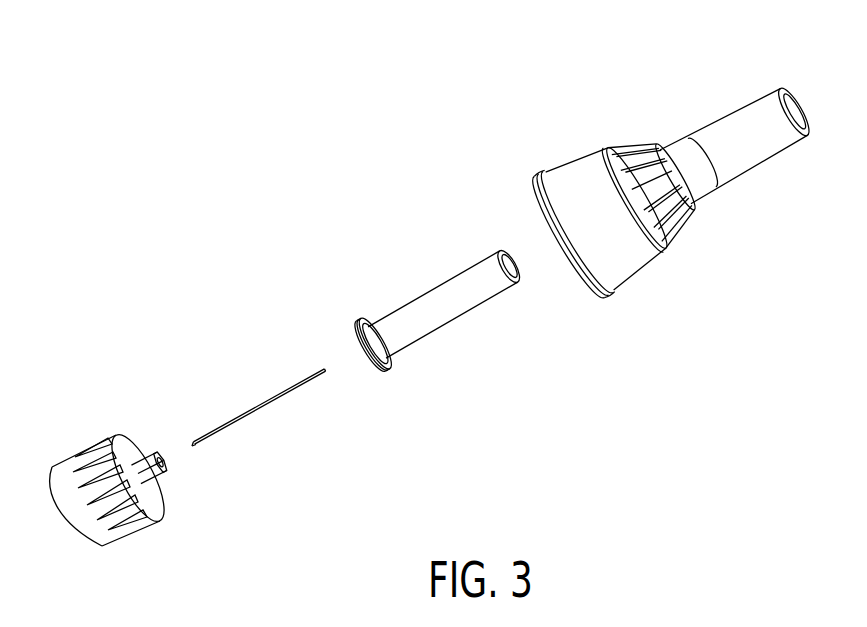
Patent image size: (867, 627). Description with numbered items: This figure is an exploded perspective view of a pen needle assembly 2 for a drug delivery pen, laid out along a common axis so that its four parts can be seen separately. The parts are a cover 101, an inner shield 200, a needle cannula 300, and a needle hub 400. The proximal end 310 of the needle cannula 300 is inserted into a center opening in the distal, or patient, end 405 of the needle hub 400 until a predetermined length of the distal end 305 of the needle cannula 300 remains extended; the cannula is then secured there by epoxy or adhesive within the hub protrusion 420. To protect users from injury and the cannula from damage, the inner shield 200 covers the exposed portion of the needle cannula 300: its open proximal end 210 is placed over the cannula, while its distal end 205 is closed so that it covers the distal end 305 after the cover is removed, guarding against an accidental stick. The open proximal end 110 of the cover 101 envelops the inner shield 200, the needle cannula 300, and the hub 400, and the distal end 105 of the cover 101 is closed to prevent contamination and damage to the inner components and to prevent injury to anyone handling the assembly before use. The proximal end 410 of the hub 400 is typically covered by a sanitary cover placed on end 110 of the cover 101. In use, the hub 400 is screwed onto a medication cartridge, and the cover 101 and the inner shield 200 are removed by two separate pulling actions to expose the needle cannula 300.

The pen needle assembly 2 is at (226, 190).
The cover 101 is at (752, 172).
The distal end of the cover 105 is at (782, 87).
The open proximal end of the cover 110 is at (535, 192).
The inner shield 200 is at (445, 318).
The distal end of the inner shield 205 is at (515, 285).
The open proximal end of the inner shield 210 is at (368, 358).
The needle cannula 300 is at (263, 405).
The distal end of the needle cannula 305 is at (323, 367).
The proximal end of the needle cannula 310 is at (197, 440).
The needle hub 400 is at (107, 537).
The distal end of the needle hub 405 is at (151, 434).
The proximal end of the hub 410 is at (71, 544).
The hub protrusion 420 is at (157, 477).